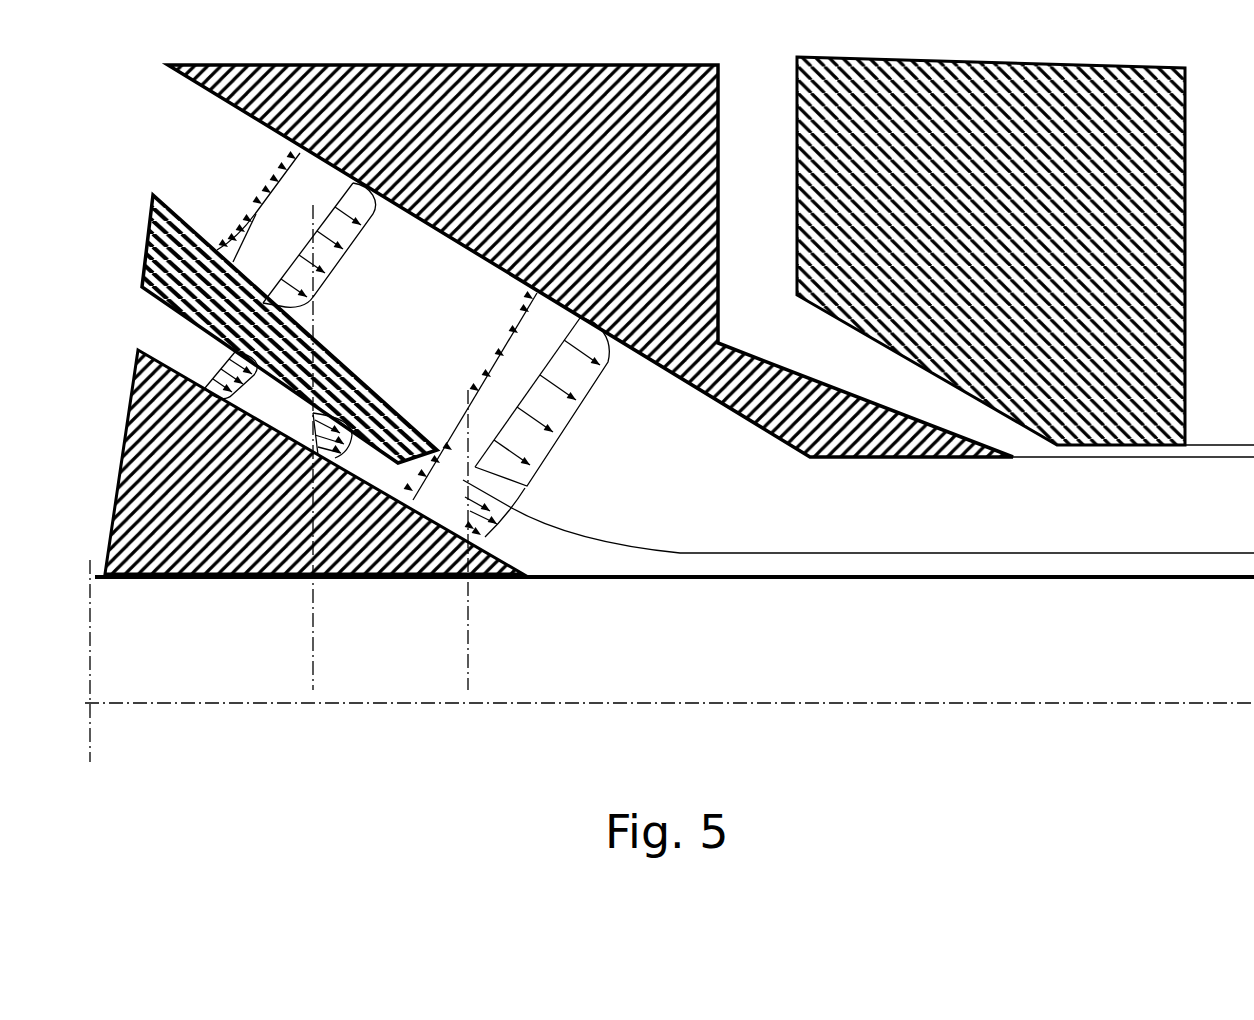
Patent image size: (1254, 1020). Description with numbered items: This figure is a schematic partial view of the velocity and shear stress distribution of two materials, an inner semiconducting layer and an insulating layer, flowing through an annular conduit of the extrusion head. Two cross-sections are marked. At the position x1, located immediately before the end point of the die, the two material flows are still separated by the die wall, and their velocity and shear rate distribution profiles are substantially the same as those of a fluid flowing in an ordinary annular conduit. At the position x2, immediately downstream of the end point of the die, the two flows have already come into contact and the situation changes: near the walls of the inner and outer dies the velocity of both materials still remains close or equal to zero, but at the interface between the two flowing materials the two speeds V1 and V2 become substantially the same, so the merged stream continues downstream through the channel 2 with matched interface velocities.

The flow channel 2 is at (1005, 578).
The speed V1 is at (487, 500).
The speed V2 is at (505, 489).
The position x1 is at (312, 660).
The position x2 is at (468, 673).